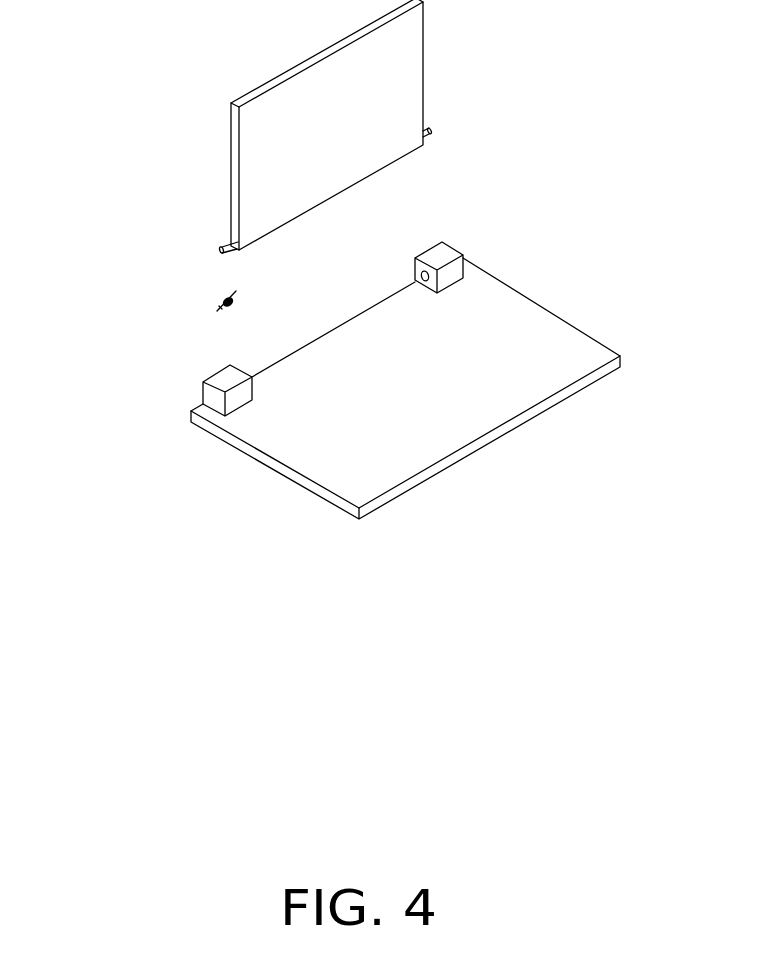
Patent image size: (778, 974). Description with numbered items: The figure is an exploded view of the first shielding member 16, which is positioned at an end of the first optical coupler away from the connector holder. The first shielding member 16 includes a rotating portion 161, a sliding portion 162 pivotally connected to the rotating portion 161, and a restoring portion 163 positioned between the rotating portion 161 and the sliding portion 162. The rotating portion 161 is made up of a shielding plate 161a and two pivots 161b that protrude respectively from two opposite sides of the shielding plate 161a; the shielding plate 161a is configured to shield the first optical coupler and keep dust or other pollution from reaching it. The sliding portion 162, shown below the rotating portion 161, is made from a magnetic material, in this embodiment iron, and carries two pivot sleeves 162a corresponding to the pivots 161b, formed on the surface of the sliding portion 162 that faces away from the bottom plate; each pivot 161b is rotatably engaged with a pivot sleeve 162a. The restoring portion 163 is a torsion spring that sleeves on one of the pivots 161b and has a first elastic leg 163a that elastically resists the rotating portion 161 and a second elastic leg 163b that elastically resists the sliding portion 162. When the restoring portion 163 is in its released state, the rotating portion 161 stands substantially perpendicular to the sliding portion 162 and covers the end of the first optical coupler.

The first shielding member 16 is at (68, 180).
The rotating portion 161 is at (131, 147).
The shielding plate 161a is at (250, 151).
The pivots 161b is at (227, 246).
The sliding portion 162 is at (288, 379).
The pivot sleeves 162a is at (215, 396).
The restoring portion 163 is at (224, 300).
The first elastic leg 163a is at (236, 291).
The second elastic leg 163b is at (222, 309).